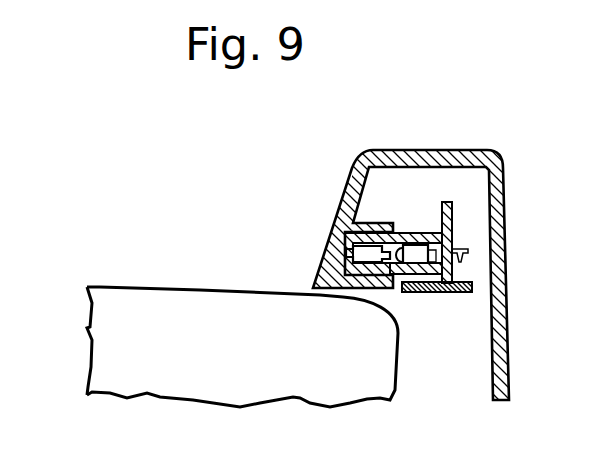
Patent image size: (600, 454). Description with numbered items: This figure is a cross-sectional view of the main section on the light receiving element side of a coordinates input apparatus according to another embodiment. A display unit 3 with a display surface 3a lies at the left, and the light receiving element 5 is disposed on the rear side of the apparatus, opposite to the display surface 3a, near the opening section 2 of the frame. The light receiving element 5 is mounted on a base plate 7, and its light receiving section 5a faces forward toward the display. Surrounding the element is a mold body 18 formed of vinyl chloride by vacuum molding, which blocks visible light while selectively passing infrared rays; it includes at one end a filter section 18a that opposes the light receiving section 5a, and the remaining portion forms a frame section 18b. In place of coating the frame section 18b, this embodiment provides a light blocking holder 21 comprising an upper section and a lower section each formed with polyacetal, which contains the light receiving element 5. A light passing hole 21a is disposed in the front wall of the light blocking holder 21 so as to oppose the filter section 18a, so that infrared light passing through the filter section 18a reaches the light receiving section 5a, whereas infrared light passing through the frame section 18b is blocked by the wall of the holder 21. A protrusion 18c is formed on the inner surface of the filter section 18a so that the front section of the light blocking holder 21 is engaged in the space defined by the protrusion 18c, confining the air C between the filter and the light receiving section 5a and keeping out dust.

The opening section 2 is at (193, 228).
The display unit 3 is at (87, 328).
The display surface 3a is at (118, 285).
The light receiving element 5 is at (413, 250).
The light receiving section 5a is at (409, 241).
The base plate 7 is at (458, 247).
The mold body 18 is at (402, 152).
The filter section 18a is at (323, 262).
The frame section 18b is at (506, 176).
The protrusion 18c is at (348, 183).
The light blocking holder 21 is at (437, 231).
The light passing hole 21a is at (336, 258).
The air C is at (368, 257).